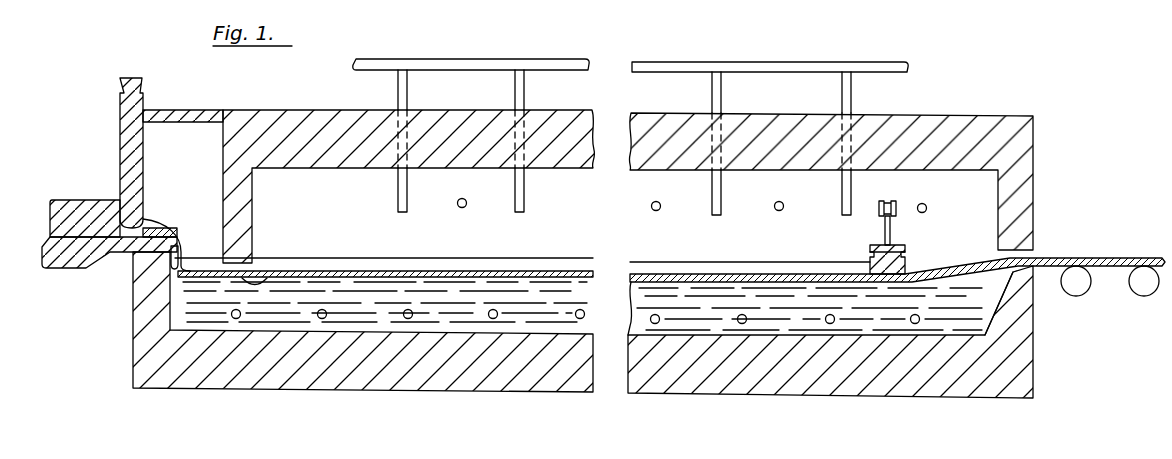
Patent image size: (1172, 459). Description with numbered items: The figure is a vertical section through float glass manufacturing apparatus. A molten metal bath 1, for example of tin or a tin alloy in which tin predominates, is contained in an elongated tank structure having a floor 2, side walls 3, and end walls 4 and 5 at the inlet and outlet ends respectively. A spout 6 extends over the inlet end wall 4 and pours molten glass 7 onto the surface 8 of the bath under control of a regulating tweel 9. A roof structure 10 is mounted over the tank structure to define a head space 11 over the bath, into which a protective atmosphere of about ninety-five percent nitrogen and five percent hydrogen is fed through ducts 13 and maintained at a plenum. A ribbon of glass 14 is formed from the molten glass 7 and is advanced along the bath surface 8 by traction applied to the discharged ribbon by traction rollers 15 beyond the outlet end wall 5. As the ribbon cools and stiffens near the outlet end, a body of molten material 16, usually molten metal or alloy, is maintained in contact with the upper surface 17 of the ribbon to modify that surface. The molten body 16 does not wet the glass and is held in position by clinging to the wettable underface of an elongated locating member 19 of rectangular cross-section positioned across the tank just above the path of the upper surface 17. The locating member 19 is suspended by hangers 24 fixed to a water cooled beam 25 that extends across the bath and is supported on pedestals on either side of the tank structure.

The molten metal bath 1 is at (447, 318).
The floor 2 is at (724, 383).
The side walls 3 is at (530, 262).
The end wall 4 is at (137, 344).
The end wall 5 is at (1011, 322).
The spout 6 is at (69, 262).
The molten glass 7 is at (197, 260).
The surface of the molten metal bath 8 is at (245, 283).
The regulating tweel 9 is at (128, 149).
The roof structure 10 is at (296, 112).
The head space 11 is at (452, 237).
The ducts 13 is at (408, 100).
The ribbon of glass 14 is at (385, 276).
The traction rollers 15 is at (1077, 290).
The body of molten material 16 is at (868, 275).
The upper surface of the ribbon 17 is at (722, 272).
The locating member 19 is at (906, 256).
The hangers 24 is at (891, 223).
The water cooled beam 25 is at (890, 203).